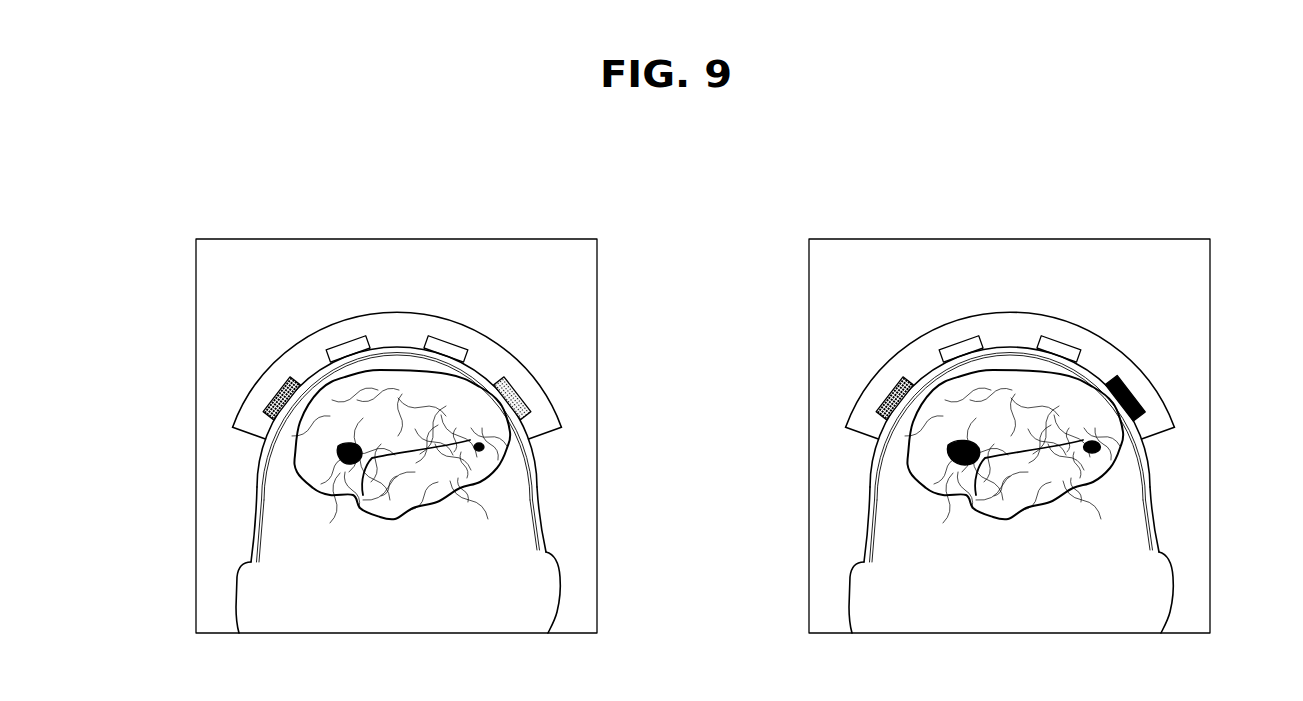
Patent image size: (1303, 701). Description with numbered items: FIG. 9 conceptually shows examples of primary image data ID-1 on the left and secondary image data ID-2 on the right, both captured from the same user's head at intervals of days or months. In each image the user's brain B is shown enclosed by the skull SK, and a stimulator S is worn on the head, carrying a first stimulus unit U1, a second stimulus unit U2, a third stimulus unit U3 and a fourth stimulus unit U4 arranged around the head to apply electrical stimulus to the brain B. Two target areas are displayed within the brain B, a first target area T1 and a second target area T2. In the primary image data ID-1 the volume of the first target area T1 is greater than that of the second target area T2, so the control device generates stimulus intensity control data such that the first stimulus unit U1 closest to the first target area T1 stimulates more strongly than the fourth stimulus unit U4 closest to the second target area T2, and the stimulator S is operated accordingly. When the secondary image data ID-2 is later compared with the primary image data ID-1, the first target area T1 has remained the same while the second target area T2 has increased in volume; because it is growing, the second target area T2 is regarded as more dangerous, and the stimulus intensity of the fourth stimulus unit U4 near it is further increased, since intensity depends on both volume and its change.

The primary image data ID-1 is at (530, 239).
The secondary image data ID-2 is at (1011, 421).
The stimulator S is at (255, 401).
The first stimulus unit U1 is at (273, 400).
The second stimulus unit U2 is at (350, 337).
The third stimulus unit U3 is at (449, 347).
The fourth stimulus unit U4 is at (518, 398).
The skull SK is at (257, 536).
The brain B is at (395, 519).
The first target area T1 is at (338, 456).
The second target area T2 is at (482, 449).